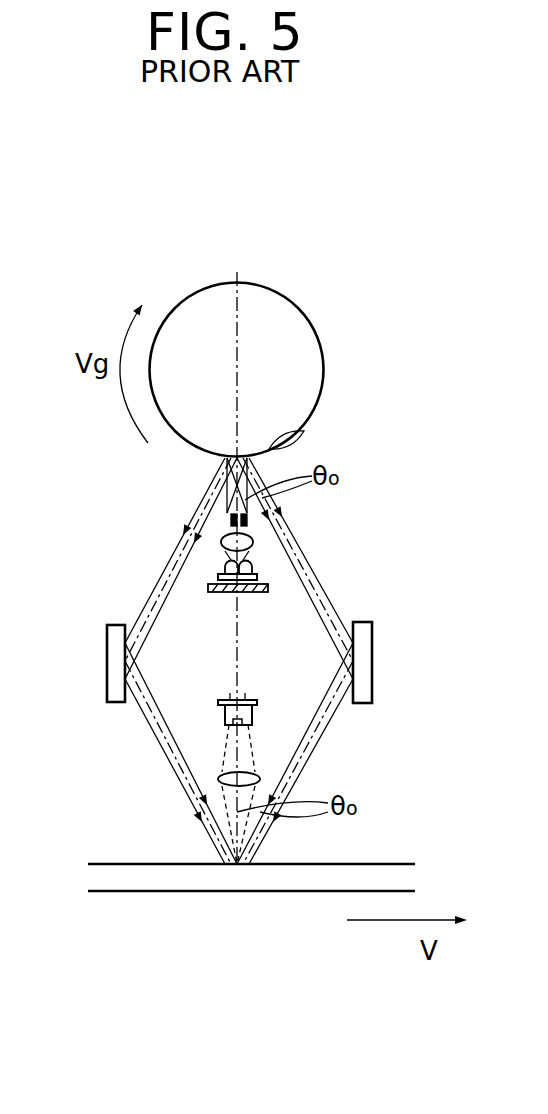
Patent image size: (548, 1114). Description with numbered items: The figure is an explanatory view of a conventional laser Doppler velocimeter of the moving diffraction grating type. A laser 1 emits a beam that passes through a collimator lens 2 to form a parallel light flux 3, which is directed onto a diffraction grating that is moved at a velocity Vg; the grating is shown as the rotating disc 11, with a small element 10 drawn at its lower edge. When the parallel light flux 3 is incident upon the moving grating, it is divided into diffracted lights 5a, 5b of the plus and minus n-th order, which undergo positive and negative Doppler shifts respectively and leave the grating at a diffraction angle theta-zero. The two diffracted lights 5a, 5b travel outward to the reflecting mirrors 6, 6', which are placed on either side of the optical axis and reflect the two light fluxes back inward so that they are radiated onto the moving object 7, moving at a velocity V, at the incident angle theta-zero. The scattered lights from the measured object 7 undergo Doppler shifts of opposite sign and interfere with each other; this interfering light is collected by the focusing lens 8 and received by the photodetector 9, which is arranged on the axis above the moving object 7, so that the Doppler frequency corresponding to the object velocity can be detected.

The laser 1 is at (252, 572).
The collimator lens 2 is at (252, 545).
The parallel light flux 3 is at (232, 520).
The diffracted light of the +n-th order 5a is at (178, 566).
The diffracted light of the -n-th order 5b is at (316, 601).
The reflecting mirror 6 is at (90, 663).
The reflecting mirror 6' is at (385, 662).
The moving object 7 is at (390, 871).
The focusing lens 8 is at (222, 806).
The photodetector 9 is at (192, 762).
The lens 10 is at (292, 440).
The rotating diffraction grating disc 11 is at (290, 331).